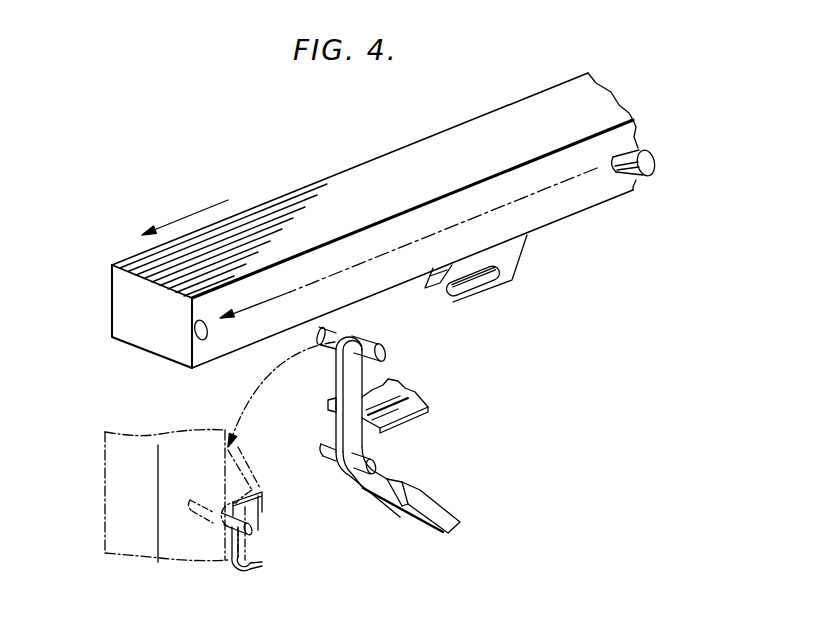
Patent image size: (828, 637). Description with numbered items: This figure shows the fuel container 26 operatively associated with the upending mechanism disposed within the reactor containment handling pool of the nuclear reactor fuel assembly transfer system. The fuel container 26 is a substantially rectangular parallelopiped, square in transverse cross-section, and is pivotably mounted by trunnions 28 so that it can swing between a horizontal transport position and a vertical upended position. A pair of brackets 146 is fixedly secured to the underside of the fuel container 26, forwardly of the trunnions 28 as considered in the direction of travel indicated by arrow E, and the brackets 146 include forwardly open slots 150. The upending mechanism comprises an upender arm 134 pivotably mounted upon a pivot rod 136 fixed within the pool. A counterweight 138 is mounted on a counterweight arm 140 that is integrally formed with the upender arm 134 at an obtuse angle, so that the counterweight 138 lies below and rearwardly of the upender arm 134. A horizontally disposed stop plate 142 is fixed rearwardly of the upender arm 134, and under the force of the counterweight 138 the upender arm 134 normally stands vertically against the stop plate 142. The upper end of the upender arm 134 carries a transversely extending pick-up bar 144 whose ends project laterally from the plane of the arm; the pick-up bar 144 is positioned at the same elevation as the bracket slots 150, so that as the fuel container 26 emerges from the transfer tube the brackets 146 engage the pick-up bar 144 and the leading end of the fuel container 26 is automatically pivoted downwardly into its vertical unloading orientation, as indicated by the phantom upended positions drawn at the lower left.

The fuel container 26 is at (403, 155).
The trunnions 28 is at (644, 152).
The brackets 146 is at (438, 277).
The slots 150 is at (447, 294).
The pick-up bar 144 is at (380, 345).
The upender arm 134 is at (343, 385).
The stop plate 142 is at (420, 397).
The pivot rod 136 is at (372, 461).
The counterweight arm 140 is at (385, 474).
The counterweight 138 is at (446, 518).